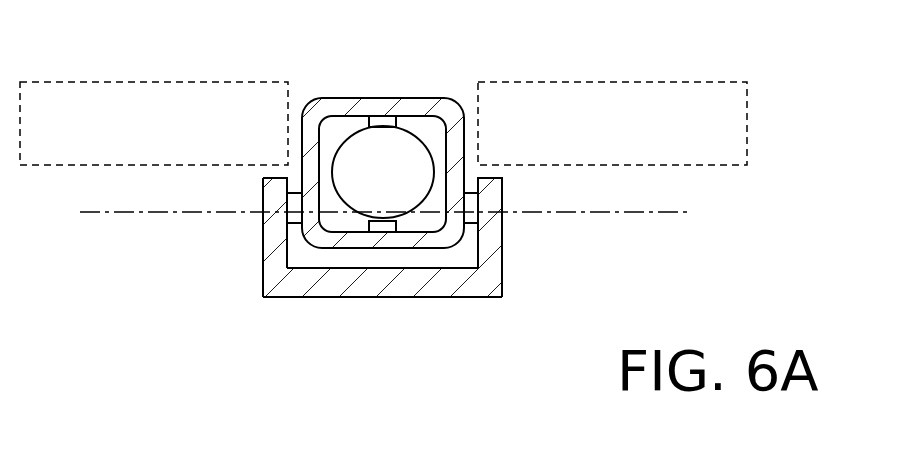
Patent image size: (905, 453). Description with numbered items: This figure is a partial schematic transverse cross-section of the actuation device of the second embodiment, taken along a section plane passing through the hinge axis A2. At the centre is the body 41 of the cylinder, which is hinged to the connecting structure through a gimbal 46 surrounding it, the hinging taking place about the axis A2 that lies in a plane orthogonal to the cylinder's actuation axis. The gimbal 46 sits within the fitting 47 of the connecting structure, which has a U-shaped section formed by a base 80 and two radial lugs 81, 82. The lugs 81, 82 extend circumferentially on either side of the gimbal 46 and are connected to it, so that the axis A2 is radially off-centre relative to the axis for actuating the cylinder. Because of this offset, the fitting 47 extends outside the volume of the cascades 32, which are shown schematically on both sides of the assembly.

The cascades 32 is at (195, 82).
The gimbal 46 is at (369, 99).
The body 41 is at (437, 140).
The hinge axis A2 is at (130, 212).
The fitting 47 is at (429, 226).
The base 80 is at (543, 337).
The radial lug 81 is at (263, 250).
The radial lug 82 is at (502, 253).